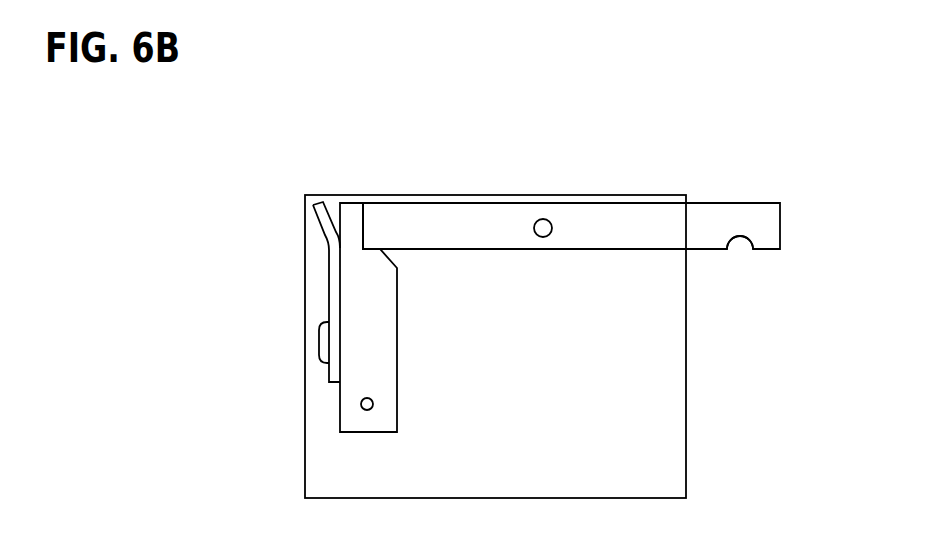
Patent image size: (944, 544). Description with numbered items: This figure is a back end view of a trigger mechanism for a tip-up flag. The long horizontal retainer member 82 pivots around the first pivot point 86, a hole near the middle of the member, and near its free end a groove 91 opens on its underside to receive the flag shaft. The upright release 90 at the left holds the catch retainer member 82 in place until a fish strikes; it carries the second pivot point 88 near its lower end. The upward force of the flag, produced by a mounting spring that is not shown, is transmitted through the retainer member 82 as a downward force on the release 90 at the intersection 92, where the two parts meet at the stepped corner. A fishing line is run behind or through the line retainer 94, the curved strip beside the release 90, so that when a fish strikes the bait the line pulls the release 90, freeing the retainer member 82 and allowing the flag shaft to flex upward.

The retainer member 82 is at (719, 213).
The first pivot point 86 is at (542, 228).
The second pivot point 88 is at (373, 406).
The release 90 is at (368, 294).
The groove 91 is at (737, 248).
The intersection 92 is at (372, 244).
The line retainer 94 is at (333, 265).